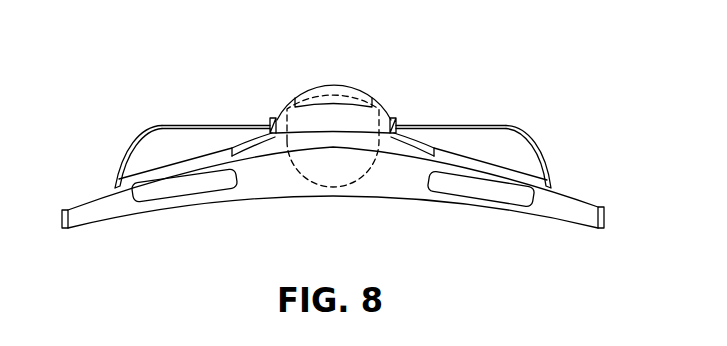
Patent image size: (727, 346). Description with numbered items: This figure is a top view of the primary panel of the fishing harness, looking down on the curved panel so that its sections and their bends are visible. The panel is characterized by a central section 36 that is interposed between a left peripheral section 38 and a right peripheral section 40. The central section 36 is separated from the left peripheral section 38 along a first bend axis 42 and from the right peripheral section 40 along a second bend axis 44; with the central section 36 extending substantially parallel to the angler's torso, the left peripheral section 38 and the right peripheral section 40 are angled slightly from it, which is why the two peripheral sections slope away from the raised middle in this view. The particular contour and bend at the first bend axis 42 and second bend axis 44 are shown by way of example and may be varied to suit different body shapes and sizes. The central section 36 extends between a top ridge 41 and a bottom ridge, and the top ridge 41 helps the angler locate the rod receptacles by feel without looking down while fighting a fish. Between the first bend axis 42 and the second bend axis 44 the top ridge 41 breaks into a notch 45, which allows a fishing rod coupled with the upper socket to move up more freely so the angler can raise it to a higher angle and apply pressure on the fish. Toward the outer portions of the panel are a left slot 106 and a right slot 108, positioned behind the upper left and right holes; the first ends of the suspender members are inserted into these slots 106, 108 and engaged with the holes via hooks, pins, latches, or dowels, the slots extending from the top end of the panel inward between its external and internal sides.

The central section 36 is at (399, 66).
The left peripheral section 38 is at (412, 91).
The right peripheral section 40 is at (241, 91).
The top ridge 41 is at (507, 158).
The first bend axis 42 is at (375, 130).
The second bend axis 44 is at (271, 124).
The notch 45 is at (295, 93).
The left slot 106 is at (467, 192).
The right slot 108 is at (200, 189).